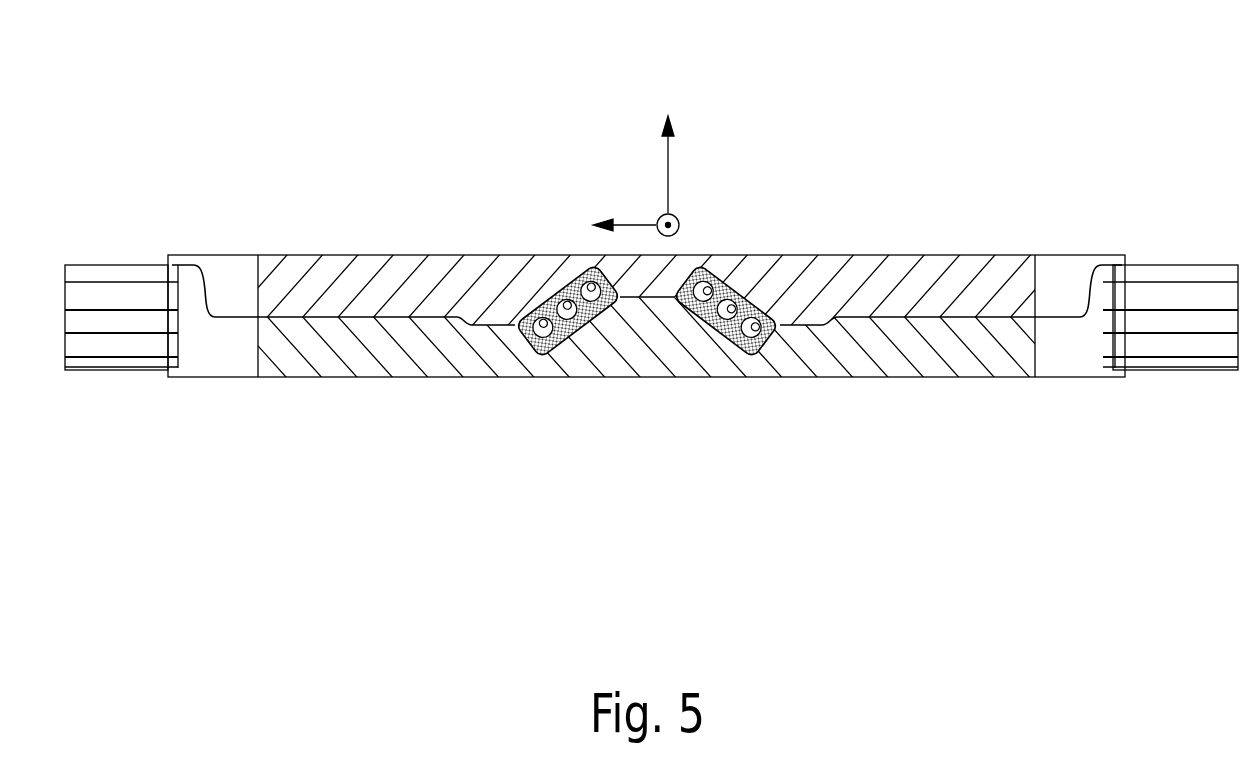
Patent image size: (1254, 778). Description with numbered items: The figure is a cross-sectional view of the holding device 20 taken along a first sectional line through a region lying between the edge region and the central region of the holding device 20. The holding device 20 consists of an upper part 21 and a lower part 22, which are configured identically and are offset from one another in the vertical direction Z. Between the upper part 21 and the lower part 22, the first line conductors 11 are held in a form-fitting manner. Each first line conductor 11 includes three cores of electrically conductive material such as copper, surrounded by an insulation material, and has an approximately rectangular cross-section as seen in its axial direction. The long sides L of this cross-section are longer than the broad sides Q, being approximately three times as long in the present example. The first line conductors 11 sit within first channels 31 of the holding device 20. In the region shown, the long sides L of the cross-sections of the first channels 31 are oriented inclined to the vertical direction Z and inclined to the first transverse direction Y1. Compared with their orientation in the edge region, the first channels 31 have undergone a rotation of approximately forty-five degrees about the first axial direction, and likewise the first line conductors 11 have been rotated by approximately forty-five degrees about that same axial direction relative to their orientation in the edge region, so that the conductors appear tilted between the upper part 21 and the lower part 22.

The holding device 20 is at (226, 162).
The upper part 21 is at (925, 285).
The lower part 22 is at (958, 350).
The first line conductor 11 is at (734, 345).
The first channel 31 is at (563, 256).
The long side L is at (540, 295).
The broad side Q is at (529, 330).
The first transverse direction Y1 is at (638, 222).
The vertical direction Z is at (668, 167).